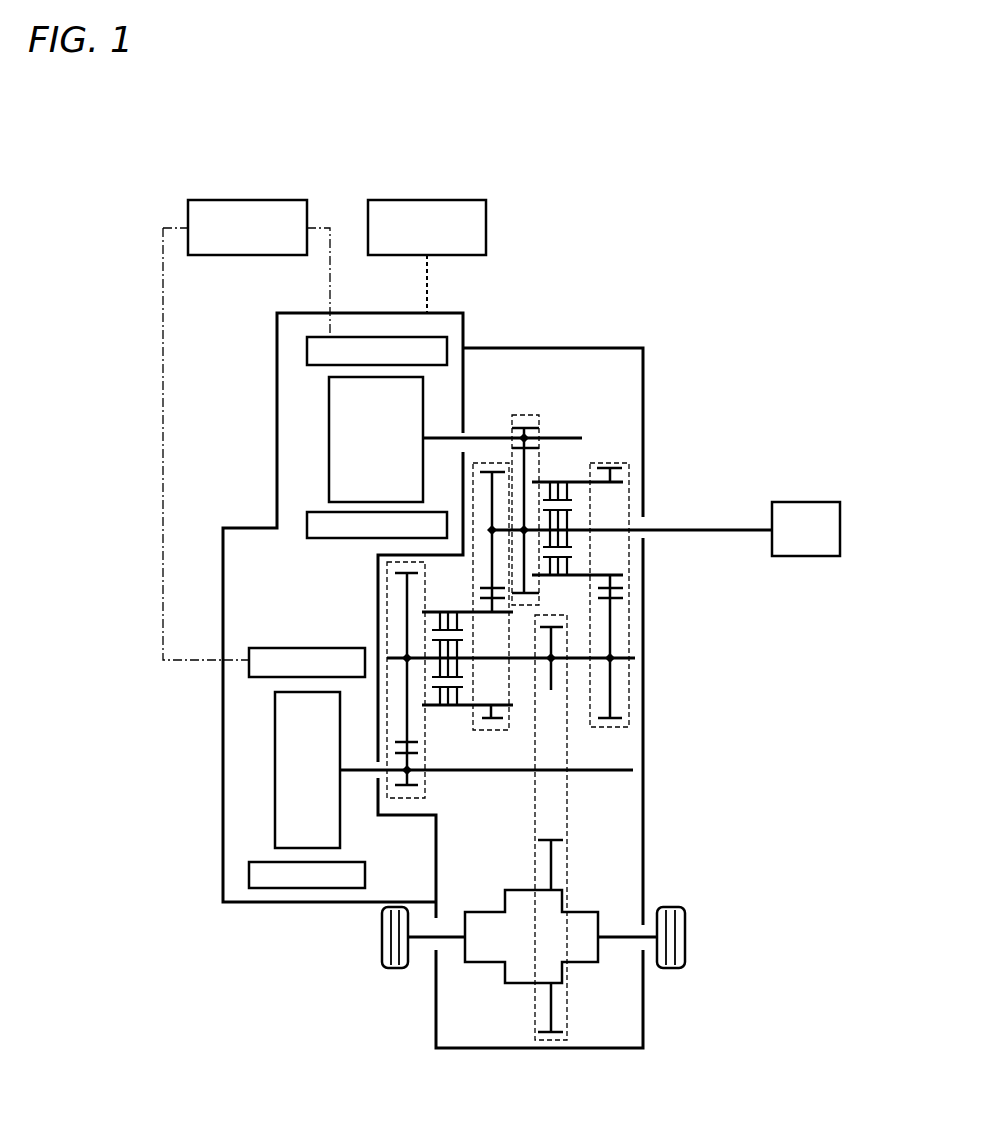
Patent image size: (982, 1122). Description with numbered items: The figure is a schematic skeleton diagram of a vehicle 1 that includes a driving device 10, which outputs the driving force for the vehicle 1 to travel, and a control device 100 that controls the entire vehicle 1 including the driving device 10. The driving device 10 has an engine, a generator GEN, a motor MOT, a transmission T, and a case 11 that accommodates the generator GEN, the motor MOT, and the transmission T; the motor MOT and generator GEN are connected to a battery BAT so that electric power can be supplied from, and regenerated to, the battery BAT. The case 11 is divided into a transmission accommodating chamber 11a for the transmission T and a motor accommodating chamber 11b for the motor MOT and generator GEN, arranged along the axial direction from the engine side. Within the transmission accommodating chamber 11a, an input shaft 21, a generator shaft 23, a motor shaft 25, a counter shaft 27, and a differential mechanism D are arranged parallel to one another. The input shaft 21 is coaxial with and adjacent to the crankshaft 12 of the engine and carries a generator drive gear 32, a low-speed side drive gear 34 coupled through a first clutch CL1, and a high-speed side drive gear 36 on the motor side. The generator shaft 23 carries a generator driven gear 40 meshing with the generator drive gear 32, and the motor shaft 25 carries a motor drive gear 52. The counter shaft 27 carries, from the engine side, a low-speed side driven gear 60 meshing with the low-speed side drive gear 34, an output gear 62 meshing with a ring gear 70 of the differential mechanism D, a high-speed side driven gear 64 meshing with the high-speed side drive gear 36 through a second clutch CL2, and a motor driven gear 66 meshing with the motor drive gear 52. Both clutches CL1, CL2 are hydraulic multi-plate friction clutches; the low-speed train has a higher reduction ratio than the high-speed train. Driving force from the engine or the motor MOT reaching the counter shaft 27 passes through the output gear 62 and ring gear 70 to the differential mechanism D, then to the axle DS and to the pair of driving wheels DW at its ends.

The vehicle 1 is at (579, 220).
The driving device 10 is at (498, 331).
The case 11 is at (645, 372).
The transmission accommodating chamber 11a is at (628, 805).
The motor accommodating chamber 11b is at (257, 555).
The crankshaft 12 is at (720, 523).
The input shaft 21 is at (640, 517).
The generator shaft 23 is at (575, 437).
The motor shaft 25 is at (633, 769).
The counter shaft 27 is at (645, 668).
The generator drive gear 32 is at (536, 472).
The low-speed side drive gear 34 is at (629, 461).
The high-speed side drive gear 36 is at (478, 463).
The generator driven gear 40 is at (520, 415).
The motor drive gear 52 is at (416, 786).
The low-speed side driven gear 60 is at (626, 604).
The output gear 62 is at (557, 620).
The high-speed side driven gear 64 is at (498, 724).
The motor driven gear 66 is at (426, 568).
The ring gear 70 is at (545, 838).
The control device 100 is at (455, 200).
The battery BAT is at (246, 430).
The generator GEN is at (340, 453).
The motor MOT is at (240, 648).
The transmission T is at (565, 383).
The first clutch CL1 is at (579, 493).
The second clutch CL2 is at (432, 622).
The differential mechanism D is at (504, 884).
The axle DS is at (453, 945).
The driving wheels DW is at (380, 952).